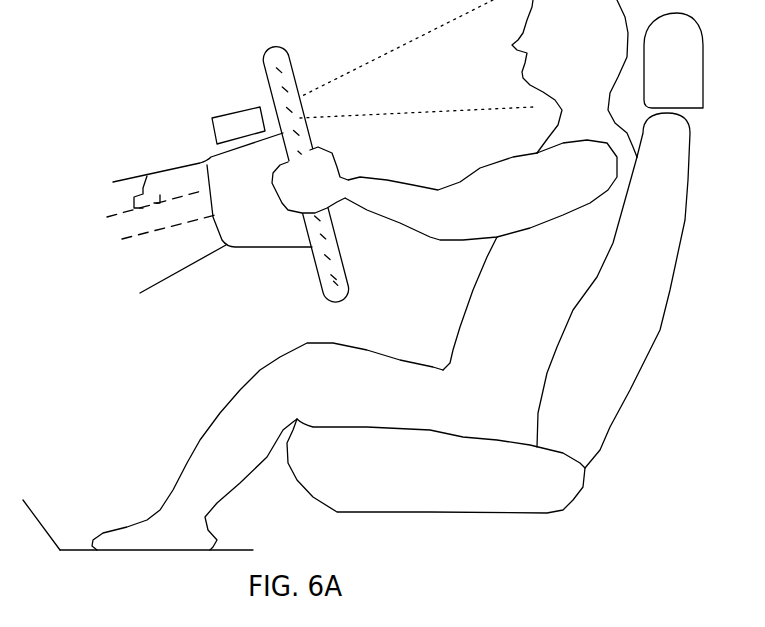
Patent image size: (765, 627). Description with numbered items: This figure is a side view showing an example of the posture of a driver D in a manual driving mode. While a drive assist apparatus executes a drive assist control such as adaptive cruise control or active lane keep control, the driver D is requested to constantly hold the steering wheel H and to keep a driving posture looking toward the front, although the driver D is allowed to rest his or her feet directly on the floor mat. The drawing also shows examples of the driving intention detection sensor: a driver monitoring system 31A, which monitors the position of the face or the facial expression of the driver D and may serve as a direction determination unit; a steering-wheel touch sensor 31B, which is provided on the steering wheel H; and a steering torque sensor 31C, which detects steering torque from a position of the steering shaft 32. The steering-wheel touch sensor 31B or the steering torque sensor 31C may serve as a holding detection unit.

The driver monitoring system 31A is at (233, 113).
The steering-wheel touch sensor 31B is at (286, 68).
The steering torque sensor 31C is at (147, 176).
The steering shaft 32 is at (132, 238).
The steering wheel H is at (321, 286).
The driver D is at (514, 147).